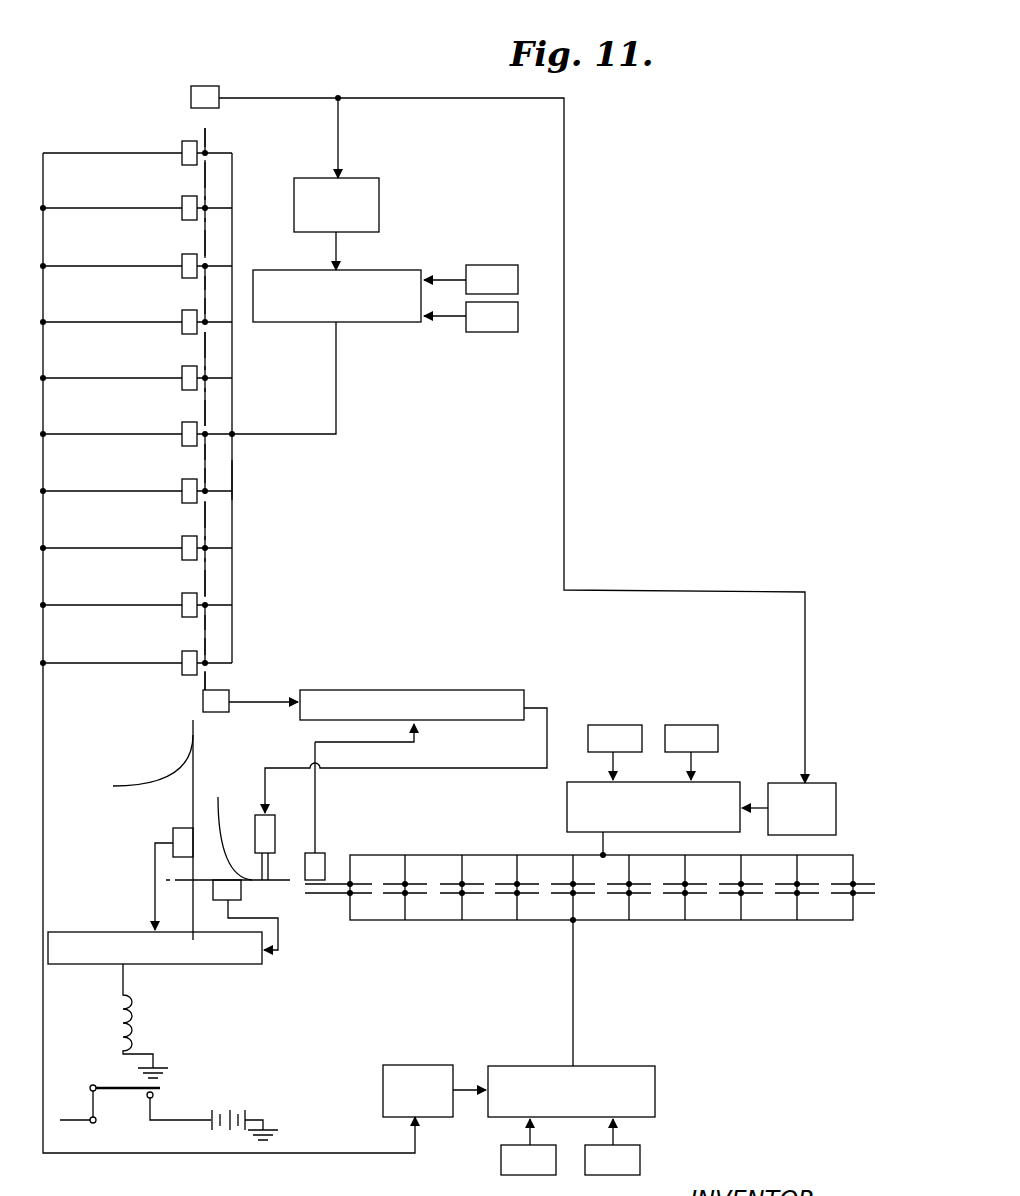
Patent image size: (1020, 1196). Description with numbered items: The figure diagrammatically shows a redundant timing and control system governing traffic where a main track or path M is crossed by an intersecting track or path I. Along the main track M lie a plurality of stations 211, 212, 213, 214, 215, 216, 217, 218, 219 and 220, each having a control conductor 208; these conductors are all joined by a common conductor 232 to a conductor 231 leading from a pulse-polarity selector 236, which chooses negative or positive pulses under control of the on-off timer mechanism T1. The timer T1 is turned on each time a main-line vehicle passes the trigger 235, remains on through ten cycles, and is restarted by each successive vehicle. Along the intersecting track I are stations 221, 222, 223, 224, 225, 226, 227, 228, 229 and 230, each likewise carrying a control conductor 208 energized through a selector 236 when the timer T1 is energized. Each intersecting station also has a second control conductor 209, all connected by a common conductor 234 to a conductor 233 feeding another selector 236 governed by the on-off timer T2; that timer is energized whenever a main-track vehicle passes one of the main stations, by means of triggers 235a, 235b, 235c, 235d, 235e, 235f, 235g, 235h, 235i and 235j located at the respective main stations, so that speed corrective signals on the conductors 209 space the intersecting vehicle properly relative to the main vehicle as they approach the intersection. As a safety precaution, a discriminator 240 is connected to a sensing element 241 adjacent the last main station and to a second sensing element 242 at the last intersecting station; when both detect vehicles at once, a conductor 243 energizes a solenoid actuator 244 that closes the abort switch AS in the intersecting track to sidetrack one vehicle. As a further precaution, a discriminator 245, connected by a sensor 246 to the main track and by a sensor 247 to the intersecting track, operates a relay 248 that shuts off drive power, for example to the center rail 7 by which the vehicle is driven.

The trigger 235 is at (200, 86).
The trigger 235a is at (182, 160).
The trigger 235b is at (182, 215).
The trigger 235c is at (182, 273).
The trigger 235d is at (182, 329).
The trigger 235e is at (182, 385).
The trigger 235f is at (182, 441).
The trigger 235g is at (182, 498).
The trigger 235h is at (182, 555).
The trigger 235i is at (182, 612).
The trigger 235j is at (182, 670).
The station 211 is at (208, 140).
The station 212 is at (207, 195).
The station 213 is at (207, 253).
The station 214 is at (207, 340).
The station 215 is at (206, 397).
The station 216 is at (206, 448).
The station 217 is at (206, 510).
The station 218 is at (206, 565).
The station 219 is at (206, 622).
The station 220 is at (204, 653).
The control conductor 208 is at (206, 678).
The control conductor 209 is at (312, 895).
The station 221 is at (868, 884).
The station 222 is at (800, 883).
The station 223 is at (744, 883).
The station 224 is at (688, 883).
The station 225 is at (658, 850).
The station 226 is at (565, 883).
The station 227 is at (524, 883).
The station 228 is at (474, 883).
The station 229 is at (420, 882).
The station 230 is at (372, 883).
The conductor 231 is at (336, 420).
The common conductor 232 is at (232, 482).
The conductor 233 is at (573, 990).
The common conductor 234 is at (508, 920).
The P1 or P2 selector 236 is at (405, 322).
The discriminator 240 is at (420, 690).
The sensing element 241 is at (203, 702).
The second sensing element 242 is at (326, 853).
The conductor 243 is at (460, 768).
The solenoid actuator 244 is at (255, 816).
The discriminator 245 is at (112, 897).
The sensor 246 is at (173, 836).
The sensor 247 is at (225, 906).
The relay 248 is at (130, 1025).
The center rail 7 is at (152, 1122).
The on-off timer mechanism T1 is at (379, 192).
The on-off timer T2 is at (383, 1105).
The main track or path M is at (191, 128).
The abort switch AS is at (172, 775).
The intersecting track or path I is at (880, 893).